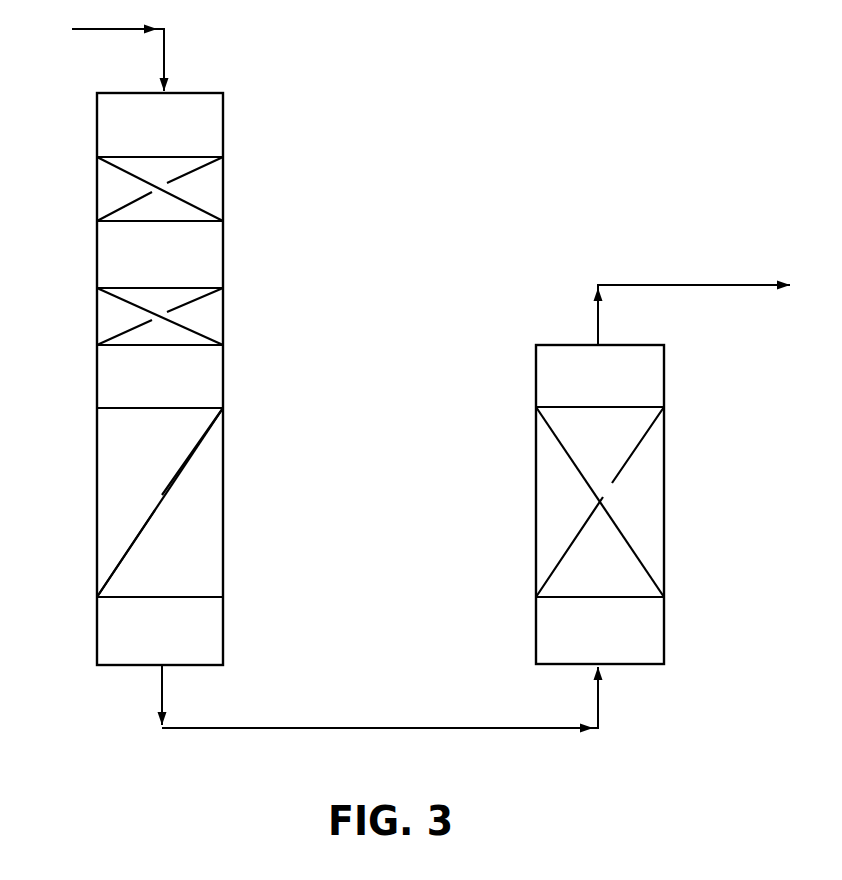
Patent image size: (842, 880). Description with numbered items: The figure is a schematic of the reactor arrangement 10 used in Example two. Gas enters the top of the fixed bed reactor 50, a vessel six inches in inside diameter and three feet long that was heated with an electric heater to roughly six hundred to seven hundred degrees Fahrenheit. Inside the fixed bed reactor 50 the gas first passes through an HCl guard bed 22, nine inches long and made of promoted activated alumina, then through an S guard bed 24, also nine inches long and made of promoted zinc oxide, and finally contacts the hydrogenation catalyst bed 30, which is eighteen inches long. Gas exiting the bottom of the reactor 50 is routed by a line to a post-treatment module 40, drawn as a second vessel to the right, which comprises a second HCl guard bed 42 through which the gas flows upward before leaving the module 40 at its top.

The hydroprocessing system 10 is at (507, 106).
The fixed bed reactor 50 is at (230, 112).
The HCl guard bed 22 is at (229, 184).
The S guard bed 24 is at (226, 301).
The hydrogenation catalyst bed 30 is at (226, 447).
The post-treatment module 40 is at (530, 389).
The second HCl guard bed 42 is at (672, 436).